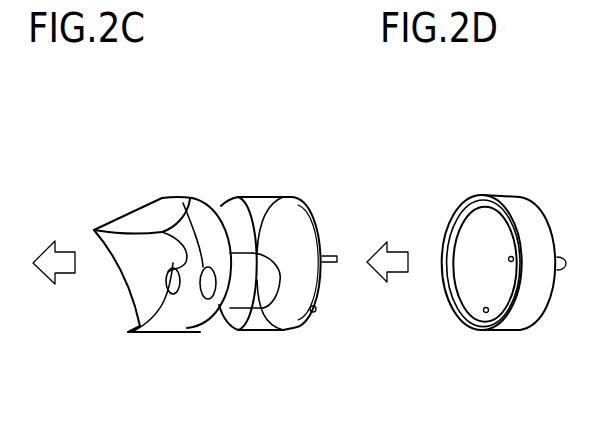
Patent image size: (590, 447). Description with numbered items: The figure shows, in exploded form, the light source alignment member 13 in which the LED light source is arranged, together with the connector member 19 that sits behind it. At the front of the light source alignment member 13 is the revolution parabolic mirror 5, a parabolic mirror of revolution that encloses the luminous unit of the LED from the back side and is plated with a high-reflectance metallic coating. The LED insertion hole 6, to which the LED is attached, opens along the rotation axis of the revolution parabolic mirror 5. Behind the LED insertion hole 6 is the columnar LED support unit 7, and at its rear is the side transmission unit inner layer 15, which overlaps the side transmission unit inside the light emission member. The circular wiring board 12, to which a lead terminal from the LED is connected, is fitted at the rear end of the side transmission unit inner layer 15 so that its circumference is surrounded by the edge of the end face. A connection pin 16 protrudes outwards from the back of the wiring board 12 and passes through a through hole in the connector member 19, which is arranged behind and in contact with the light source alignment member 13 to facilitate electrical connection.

In FIG. 2C, the light source alignment member 13 is at (190, 162).
In FIG. 2C, the revolution parabolic mirror 5 is at (177, 313).
In FIG. 2C, the LED insertion hole 6 is at (168, 293).
In FIG. 2C, the LED support unit 7 is at (243, 313).
In FIG. 2C, the side transmission unit inner layer 15 is at (287, 315).
In FIG. 2C, the wiring board 12 is at (323, 248).
In FIG. 2C, the connection pin 16 is at (317, 312).
In FIG. 2D, the connector member 19 is at (517, 320).